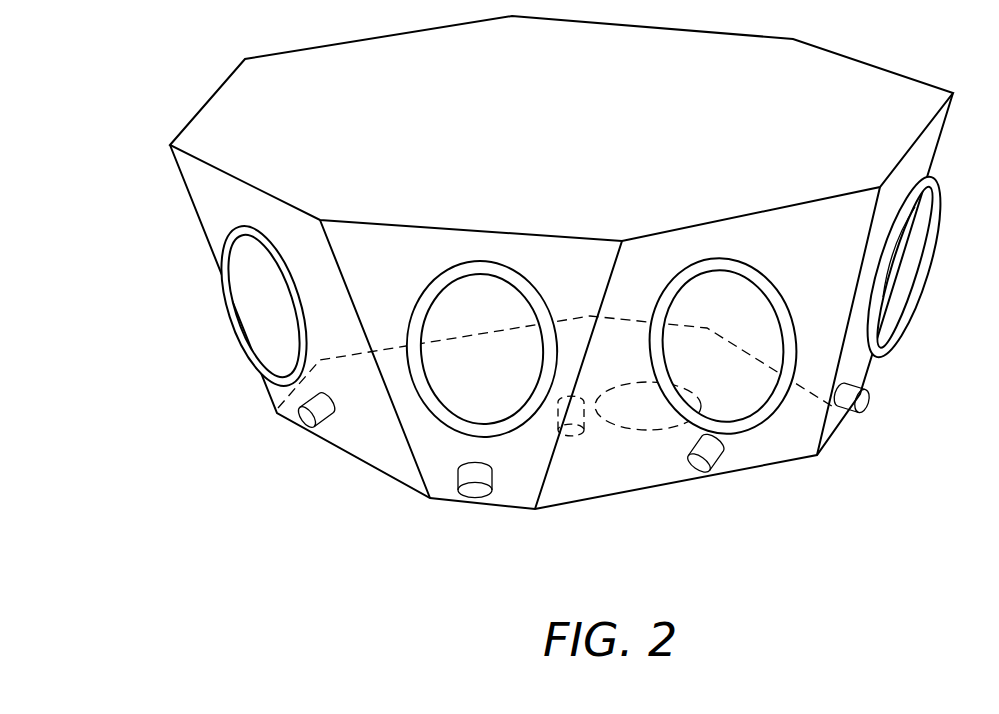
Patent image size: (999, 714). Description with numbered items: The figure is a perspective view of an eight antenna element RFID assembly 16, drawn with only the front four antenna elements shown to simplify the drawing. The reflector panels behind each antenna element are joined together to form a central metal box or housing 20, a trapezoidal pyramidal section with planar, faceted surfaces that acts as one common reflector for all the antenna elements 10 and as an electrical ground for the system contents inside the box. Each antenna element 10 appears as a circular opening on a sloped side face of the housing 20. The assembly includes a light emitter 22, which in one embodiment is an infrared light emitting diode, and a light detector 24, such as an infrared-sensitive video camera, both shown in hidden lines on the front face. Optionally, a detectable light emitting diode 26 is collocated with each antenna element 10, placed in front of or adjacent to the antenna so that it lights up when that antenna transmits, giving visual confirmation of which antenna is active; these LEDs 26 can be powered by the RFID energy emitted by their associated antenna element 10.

The antenna element 10 is at (238, 310).
The RFID assembly 16 is at (566, 147).
The central housing 20 is at (900, 72).
The light emitter 22 is at (570, 438).
The light detector 24 is at (640, 430).
The detectable light emitting diode 26 is at (308, 420).